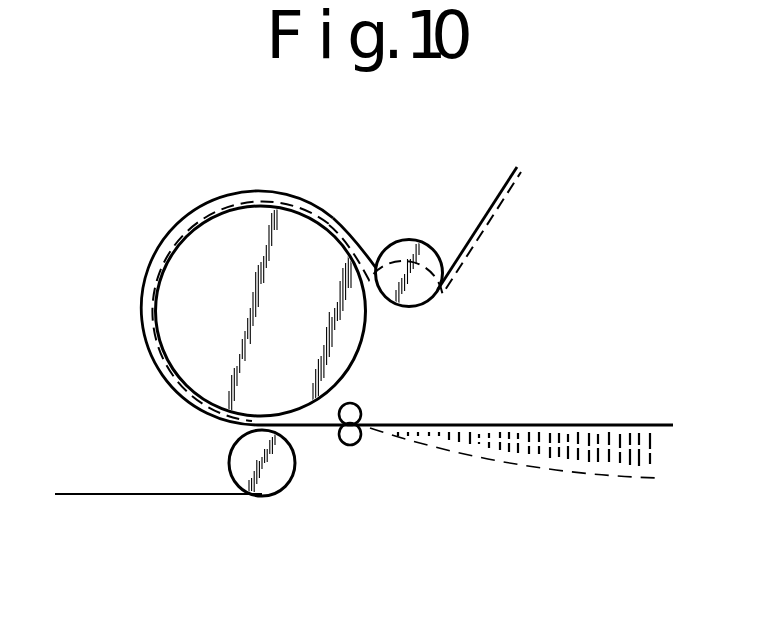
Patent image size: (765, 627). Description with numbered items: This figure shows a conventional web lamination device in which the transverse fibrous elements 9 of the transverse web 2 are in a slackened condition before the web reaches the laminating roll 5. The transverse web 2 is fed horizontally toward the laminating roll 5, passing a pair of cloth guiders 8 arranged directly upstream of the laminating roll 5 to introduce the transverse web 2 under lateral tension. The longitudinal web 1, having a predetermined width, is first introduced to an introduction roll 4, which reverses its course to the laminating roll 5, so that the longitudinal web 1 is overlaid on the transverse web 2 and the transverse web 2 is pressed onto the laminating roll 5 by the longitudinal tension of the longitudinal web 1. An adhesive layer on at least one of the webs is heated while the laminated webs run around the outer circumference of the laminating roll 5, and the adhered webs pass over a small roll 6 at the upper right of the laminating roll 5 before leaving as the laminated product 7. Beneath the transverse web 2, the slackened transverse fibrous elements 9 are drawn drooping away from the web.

The longitudinal web 1 is at (157, 496).
The transverse web 2 is at (565, 425).
The introduction roll 4 is at (230, 466).
The laminating roll 5 is at (362, 358).
The belt roller 6 is at (405, 240).
The laminated product 7 is at (497, 193).
The cloth guiders 8 is at (341, 436).
The transverse fibrous elements 9 is at (563, 478).